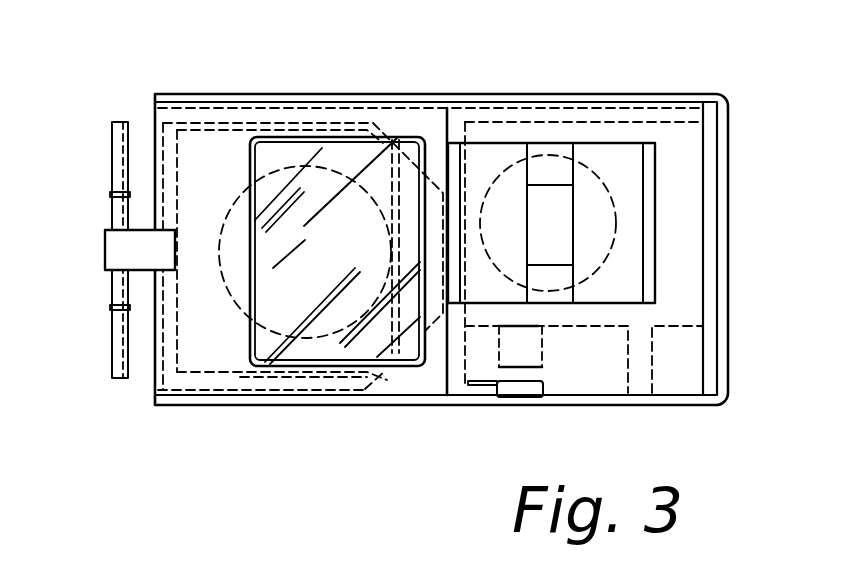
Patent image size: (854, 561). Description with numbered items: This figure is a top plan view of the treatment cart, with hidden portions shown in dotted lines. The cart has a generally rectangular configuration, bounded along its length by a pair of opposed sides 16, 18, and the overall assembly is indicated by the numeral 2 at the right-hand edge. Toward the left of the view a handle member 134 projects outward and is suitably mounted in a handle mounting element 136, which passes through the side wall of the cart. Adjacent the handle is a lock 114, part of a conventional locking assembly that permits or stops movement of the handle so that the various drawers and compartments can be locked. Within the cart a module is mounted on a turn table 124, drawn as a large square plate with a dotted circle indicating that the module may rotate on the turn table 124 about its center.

The housing 2 is at (740, 247).
The side 16 is at (427, 73).
The side 18 is at (678, 416).
The lock 114 is at (149, 322).
The turn table 124 is at (325, 322).
The handle member 134 is at (117, 210).
The handle mounting element 136 is at (133, 248).